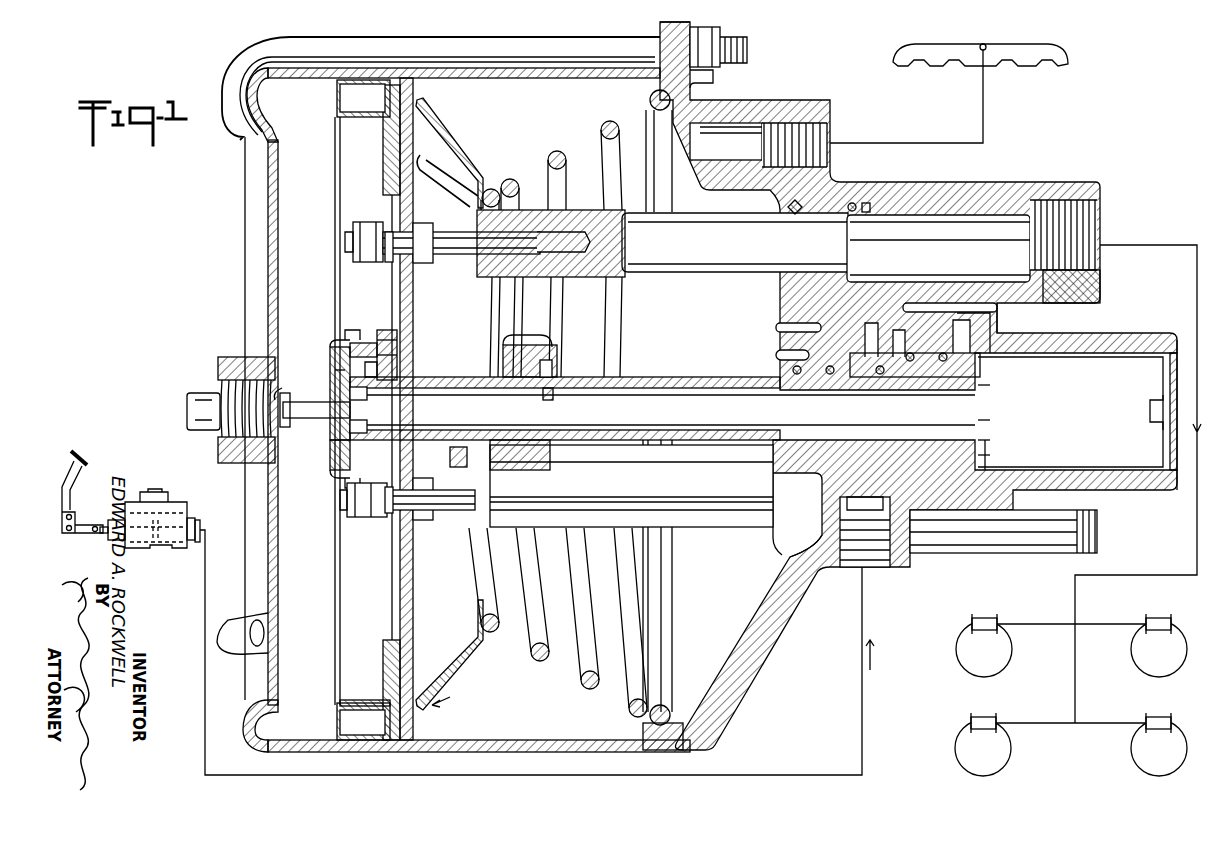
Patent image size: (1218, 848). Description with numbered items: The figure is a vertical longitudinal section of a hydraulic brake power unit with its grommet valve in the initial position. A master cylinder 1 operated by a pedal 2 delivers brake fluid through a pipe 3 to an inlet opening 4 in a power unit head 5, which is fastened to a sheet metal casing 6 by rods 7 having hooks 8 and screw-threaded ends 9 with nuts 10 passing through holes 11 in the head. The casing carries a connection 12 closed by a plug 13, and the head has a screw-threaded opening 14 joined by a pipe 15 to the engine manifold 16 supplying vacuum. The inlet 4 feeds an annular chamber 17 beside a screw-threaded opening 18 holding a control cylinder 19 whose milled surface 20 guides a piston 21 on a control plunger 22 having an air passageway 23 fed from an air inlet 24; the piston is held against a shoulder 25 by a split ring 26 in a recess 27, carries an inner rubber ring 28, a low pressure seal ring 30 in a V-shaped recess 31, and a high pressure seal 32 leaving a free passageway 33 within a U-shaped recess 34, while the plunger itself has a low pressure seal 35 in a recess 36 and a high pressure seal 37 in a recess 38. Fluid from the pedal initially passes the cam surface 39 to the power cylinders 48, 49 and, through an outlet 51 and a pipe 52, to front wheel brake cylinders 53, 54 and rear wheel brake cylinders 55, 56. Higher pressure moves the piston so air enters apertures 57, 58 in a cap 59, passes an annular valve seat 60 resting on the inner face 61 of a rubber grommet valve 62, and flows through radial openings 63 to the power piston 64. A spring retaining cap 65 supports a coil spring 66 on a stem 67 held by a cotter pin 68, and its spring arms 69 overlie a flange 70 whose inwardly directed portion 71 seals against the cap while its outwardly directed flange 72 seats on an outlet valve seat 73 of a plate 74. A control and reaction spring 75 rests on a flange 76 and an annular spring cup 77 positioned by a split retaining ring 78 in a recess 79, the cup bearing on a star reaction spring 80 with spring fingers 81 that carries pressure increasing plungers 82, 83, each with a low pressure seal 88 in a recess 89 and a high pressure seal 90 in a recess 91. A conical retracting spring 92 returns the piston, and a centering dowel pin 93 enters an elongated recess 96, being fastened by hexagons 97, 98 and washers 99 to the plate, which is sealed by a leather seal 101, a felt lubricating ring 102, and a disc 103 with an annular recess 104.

The master cylinder 1 is at (168, 502).
The pedal 2 is at (80, 452).
The pipe 3 is at (786, 775).
The inlet opening 4 is at (862, 558).
The power unit head 5 is at (842, 102).
The power unit casing 6 is at (425, 70).
The rods 7 is at (575, 57).
The hooks 8 is at (226, 131).
The screw-threaded ends 9 is at (748, 50).
The nuts 10 is at (706, 78).
The holes 11 is at (660, 45).
The connection 12 is at (222, 364).
The plug 13 is at (188, 408).
The screw-threaded opening 14 is at (805, 122).
The pipe 15 is at (984, 103).
The automobile engine manifold 16 is at (989, 43).
The annular chamber 17 is at (869, 356).
The screw-threaded opening 18 is at (962, 352).
The control cylinder 19 is at (1130, 350).
The internal cylindrical milled surface 20 is at (1078, 362).
The piston 21 is at (990, 456).
The control plunger 22 is at (990, 388).
The longitudinal air passageway 23 is at (990, 424).
The air inlet 24 is at (1098, 441).
The shoulder 25 is at (878, 440).
The split ring 26 is at (840, 388).
The recess 27 is at (990, 442).
The elastic deformable ring 28 is at (878, 385).
The low pressure seal ring 30 is at (992, 325).
The V-shaped retainer recess 31 is at (985, 360).
The high pressure seal 32 is at (909, 365).
The free passageway 33 is at (940, 365).
The U-shaped recess 34 is at (950, 380).
The low pressure seal 35 is at (776, 355).
The V-shaped recess 36 is at (788, 372).
The high pressure seal 37 is at (805, 478).
The U-shaped recess 38 is at (812, 505).
The cam surface 39 is at (896, 356).
The power cylinder 48 is at (948, 213).
The power cylinder 49 is at (990, 537).
The screw-threaded outlet 51 is at (1100, 230).
The pipe 52 is at (1140, 245).
The front wheel brake cylinder 53 is at (985, 618).
The front wheel brake cylinder 54 is at (1158, 618).
The rear wheel brake cylinder 55 is at (985, 717).
The rear wheel brake cylinder 56 is at (1160, 717).
The aperture 57 is at (370, 424).
The aperture 58 is at (370, 396).
The cap 59 is at (345, 485).
The annular valve seat 60 is at (330, 476).
The inner face 61 is at (332, 362).
The rubber grommet valve 62 is at (333, 376).
The radial openings 63 is at (362, 343).
The power piston 64 is at (450, 697).
The spring retaining cap 65 is at (333, 342).
The coil spring 66 is at (332, 452).
The stem 67 is at (296, 420).
The cotter pin 68 is at (280, 395).
The spring arms 69 is at (348, 330).
The flange 70 is at (398, 342).
The inwardly directed portion 71 is at (378, 370).
The outwardly directed flange 72 is at (396, 332).
The outlet valve seat 73 is at (398, 356).
The plate 74 is at (416, 115).
The coil control and reaction spring 75 is at (518, 350).
The flange 76 is at (450, 455).
The annular spring cup 77 is at (552, 340).
The split retaining ring 78 is at (553, 367).
The recess 79 is at (548, 400).
The star reaction spring 80 is at (480, 178).
The spring fingers 81 is at (450, 148).
The pressure increasing plunger 82 is at (703, 242).
The pressure increasing plunger 83 is at (716, 497).
The low pressure annular seal 88 is at (792, 213).
The V-shaped recess 89 is at (787, 207).
The high pressure seal 90 is at (852, 202).
The U-shaped recess 91 is at (866, 203).
The conical retracting spring 92 is at (612, 122).
The centering dowel pin 93 is at (522, 232).
The elongated recess 96 is at (575, 232).
The hexagon 97 is at (425, 223).
The hexagon 98 is at (368, 224).
The washers 99 is at (388, 262).
The leather seal 101 is at (345, 88).
The felt lubricating ring 102 is at (345, 108).
The disc 103 is at (380, 140).
The annular recess 104 is at (352, 700).